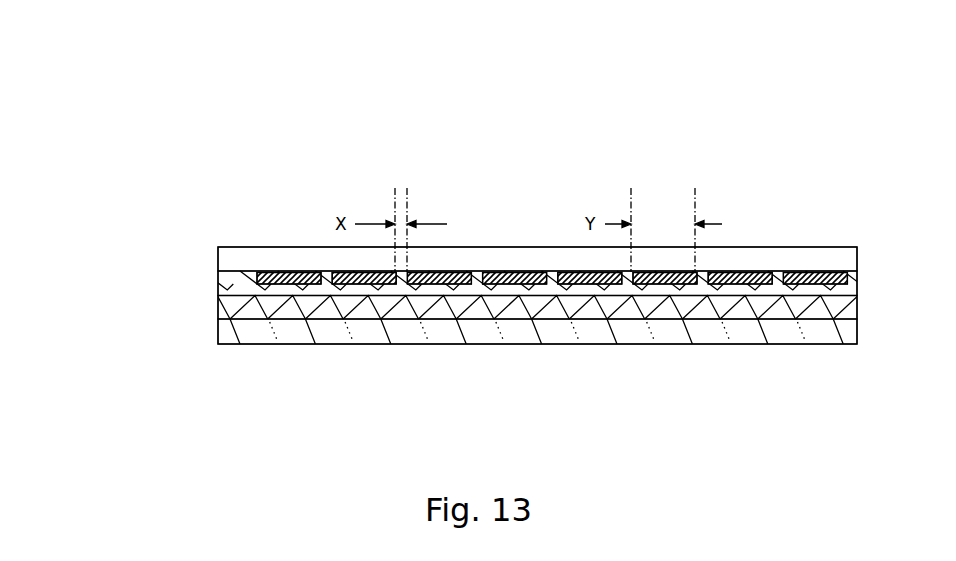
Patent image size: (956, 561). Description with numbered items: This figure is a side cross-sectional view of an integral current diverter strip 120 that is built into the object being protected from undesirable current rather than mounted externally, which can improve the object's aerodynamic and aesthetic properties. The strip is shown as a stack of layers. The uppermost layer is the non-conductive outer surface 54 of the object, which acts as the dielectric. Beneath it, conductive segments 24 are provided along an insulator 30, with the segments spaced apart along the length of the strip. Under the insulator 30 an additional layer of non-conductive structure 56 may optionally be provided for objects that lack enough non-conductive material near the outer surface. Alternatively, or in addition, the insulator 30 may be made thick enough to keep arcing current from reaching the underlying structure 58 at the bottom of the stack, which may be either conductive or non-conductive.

The integral current diverter strip 120 is at (511, 248).
The non-conductive outer surface 54 is at (217, 247).
The conductive segments 24 is at (276, 271).
The insulator 30 is at (218, 278).
The layer of non-conductive structure 56 is at (213, 310).
The underlying structure 58 is at (377, 345).